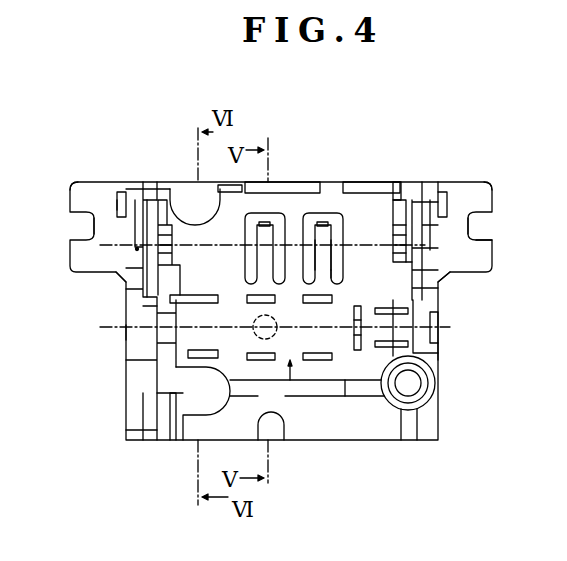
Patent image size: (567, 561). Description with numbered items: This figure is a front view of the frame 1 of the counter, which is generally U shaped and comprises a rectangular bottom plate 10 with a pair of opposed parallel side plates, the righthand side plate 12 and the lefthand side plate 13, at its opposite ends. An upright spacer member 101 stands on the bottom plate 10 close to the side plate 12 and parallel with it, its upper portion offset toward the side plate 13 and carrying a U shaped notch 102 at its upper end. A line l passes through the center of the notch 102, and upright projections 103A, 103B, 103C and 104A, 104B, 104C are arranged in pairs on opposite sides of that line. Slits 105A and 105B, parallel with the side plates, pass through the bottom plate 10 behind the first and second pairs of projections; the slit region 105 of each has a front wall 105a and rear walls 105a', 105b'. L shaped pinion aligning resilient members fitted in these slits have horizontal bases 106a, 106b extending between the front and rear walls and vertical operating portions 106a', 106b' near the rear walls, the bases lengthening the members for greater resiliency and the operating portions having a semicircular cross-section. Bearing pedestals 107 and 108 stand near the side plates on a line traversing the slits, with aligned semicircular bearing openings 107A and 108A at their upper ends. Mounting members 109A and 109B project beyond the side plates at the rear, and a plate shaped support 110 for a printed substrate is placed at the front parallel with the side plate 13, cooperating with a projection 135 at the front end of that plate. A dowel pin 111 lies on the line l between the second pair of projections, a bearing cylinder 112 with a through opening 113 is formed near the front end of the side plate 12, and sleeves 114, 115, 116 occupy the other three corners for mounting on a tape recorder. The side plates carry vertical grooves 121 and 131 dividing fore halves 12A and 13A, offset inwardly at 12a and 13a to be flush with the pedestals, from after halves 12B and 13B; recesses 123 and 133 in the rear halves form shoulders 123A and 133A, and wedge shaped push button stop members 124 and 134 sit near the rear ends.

The frame 1 is at (399, 459).
The bottom plate 10 is at (286, 441).
The righthand side plate 12 is at (448, 356).
The fore half of righthand side plate 12A is at (444, 353).
The after half of righthand side plate 12B is at (432, 183).
The inward offset of righthand side plate 12a is at (441, 319).
The lefthand side plate 13 is at (120, 344).
The fore half of lefthand side plate 13A is at (127, 332).
The after half of lefthand side plate 13B is at (124, 198).
The inward offset of lefthand side plate 13a is at (150, 306).
The spacer member 101 is at (358, 352).
The U shaped notch 102 is at (348, 400).
The upright projection 103A is at (263, 361).
The upright projection 103B is at (250, 304).
The upright projection 103C is at (207, 358).
The upright projection 104A is at (320, 361).
The upright projection 104B is at (275, 441).
The upright projection 104C is at (180, 395).
The support bar 105 is at (247, 271).
The slit 105A is at (335, 233).
The slit 105B is at (226, 186).
The front wall of slit 105a is at (361, 287).
The rear wall of slit 105a' is at (347, 179).
The rear wall of slit 105b' is at (242, 143).
The horizontal base 106a is at (353, 259).
The vertical operating portion 106a' is at (351, 190).
The horizontal base 106b is at (190, 161).
The vertical operating portion 106b' is at (282, 190).
The bearing pedestal 107 is at (397, 215).
The semicircular bearing opening 107A is at (424, 205).
The bearing pedestal 108 is at (158, 195).
The semicircular bearing opening 108A is at (146, 205).
The mounting member 109A is at (482, 184).
The mounting member 109B is at (78, 185).
The plate shaped support 110 is at (176, 433).
The dowel pin 111 is at (273, 333).
The bearing cylinder 112 is at (427, 412).
The through opening 113 is at (414, 385).
The sleeve 114 is at (408, 205).
The sleeve 115 is at (180, 425).
The sleeve 116 is at (160, 225).
The vertical groove 121 is at (431, 280).
The recess 123 is at (426, 228).
The shoulder 123A is at (428, 248).
The push button stop member 124 is at (444, 204).
The vertical groove 131 is at (131, 280).
The recess 133 is at (140, 231).
The shoulder 133A is at (137, 249).
The push button stop member 134 is at (117, 204).
The projection 135 is at (150, 422).
The line l is at (446, 328).